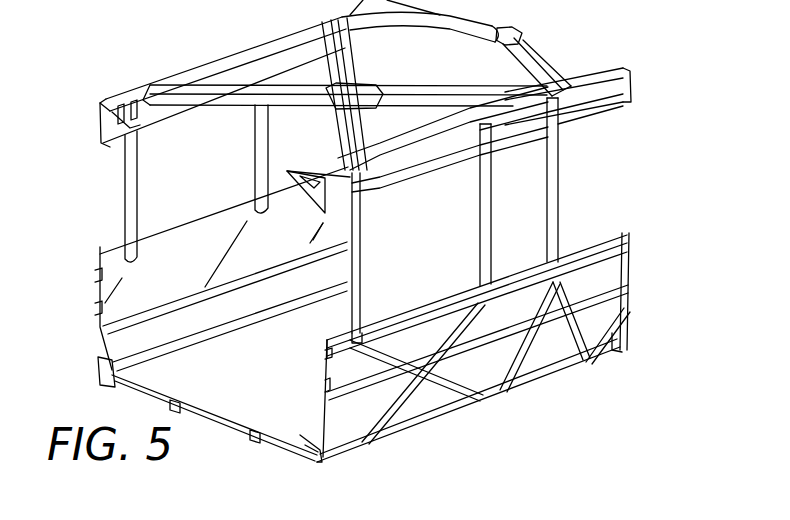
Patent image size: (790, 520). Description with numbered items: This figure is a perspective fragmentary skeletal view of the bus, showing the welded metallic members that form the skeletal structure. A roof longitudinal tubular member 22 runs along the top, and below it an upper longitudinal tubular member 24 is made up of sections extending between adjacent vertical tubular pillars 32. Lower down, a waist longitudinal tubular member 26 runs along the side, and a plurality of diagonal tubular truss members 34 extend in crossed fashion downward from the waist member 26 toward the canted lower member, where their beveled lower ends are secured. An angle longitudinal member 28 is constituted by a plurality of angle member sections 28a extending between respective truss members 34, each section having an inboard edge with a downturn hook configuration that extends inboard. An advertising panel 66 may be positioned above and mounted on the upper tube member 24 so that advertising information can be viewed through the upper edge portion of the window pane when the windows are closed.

The roof longitudinal tubular member 22 is at (603, 78).
The upper longitudinal tubular member 24 is at (447, 176).
The waist longitudinal tubular member 26 is at (600, 238).
The angle longitudinal member 28 is at (297, 436).
The angle member section 28a is at (550, 337).
The vertical tubular pillar 32 is at (560, 186).
The diagonal tubular truss member 34 is at (624, 283).
The advertising panel 66 is at (384, 180).